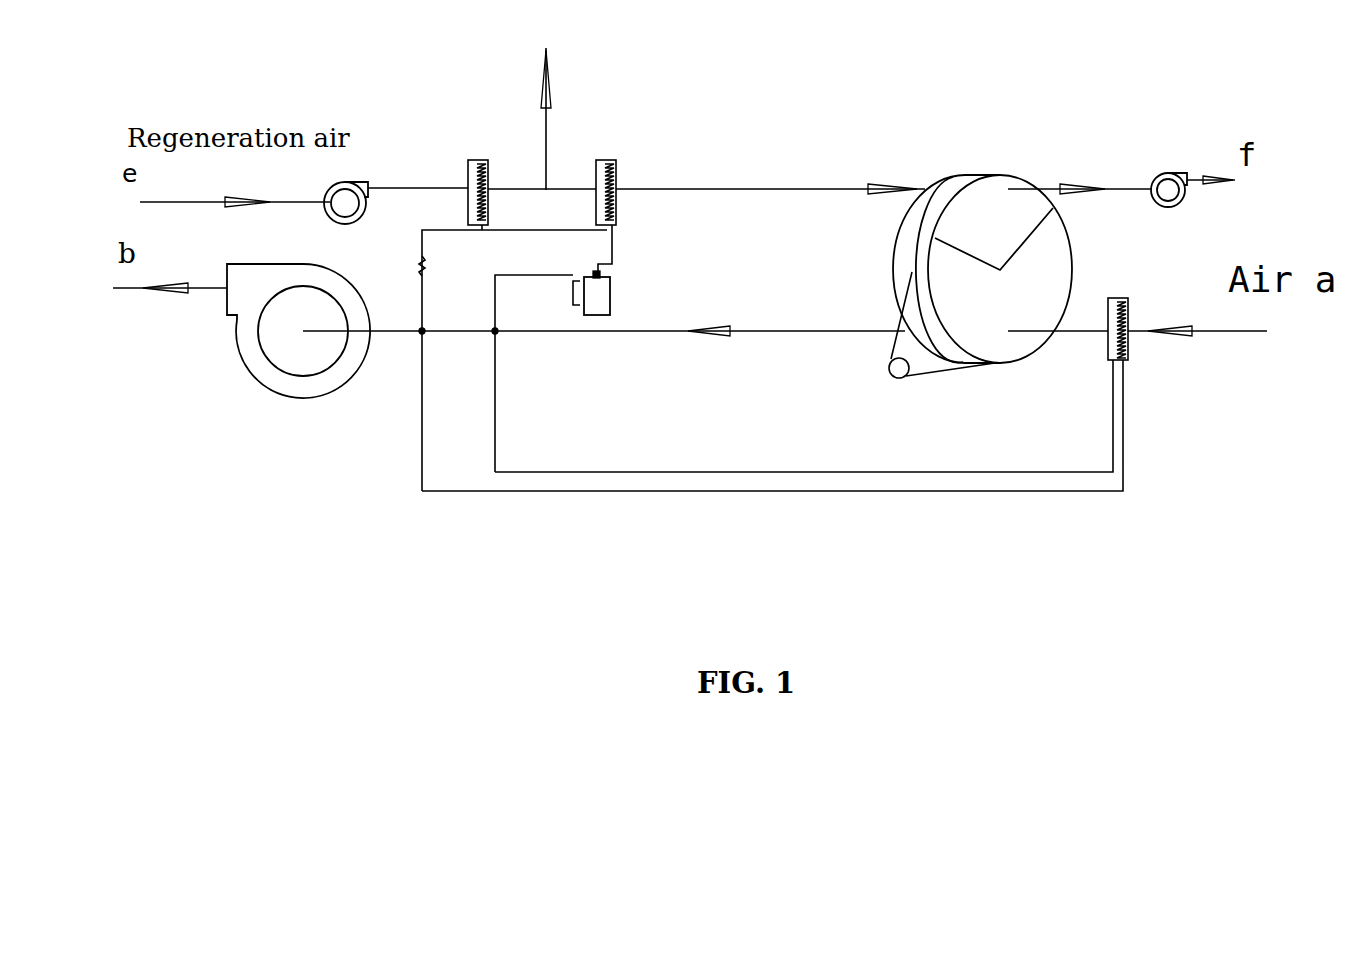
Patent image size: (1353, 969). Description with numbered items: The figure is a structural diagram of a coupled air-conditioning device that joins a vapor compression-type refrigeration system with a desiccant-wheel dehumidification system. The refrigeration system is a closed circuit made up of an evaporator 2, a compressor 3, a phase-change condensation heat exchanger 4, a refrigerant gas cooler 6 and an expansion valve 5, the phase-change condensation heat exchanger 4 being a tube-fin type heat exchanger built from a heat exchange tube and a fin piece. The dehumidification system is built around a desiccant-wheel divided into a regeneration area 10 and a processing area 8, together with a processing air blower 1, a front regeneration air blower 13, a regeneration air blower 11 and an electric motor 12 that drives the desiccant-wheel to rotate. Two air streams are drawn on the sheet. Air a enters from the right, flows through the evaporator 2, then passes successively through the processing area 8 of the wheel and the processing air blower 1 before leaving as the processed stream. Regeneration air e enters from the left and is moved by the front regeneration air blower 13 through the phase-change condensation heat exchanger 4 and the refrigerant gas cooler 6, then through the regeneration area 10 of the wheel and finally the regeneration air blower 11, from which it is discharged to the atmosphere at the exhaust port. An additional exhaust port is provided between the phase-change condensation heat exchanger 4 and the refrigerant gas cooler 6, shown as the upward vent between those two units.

The processing air blower 1 is at (280, 350).
The evaporator 2 is at (1120, 300).
The compressor 3 is at (603, 290).
The phase-change condensation heat exchanger 4 is at (480, 165).
The expansion valve 5 is at (422, 272).
The refrigerant gas cooler 6 is at (612, 165).
The processing area 8 is at (996, 315).
The regeneration area 10 is at (993, 213).
The regeneration air blower 11 is at (1175, 178).
The electric motor 12 is at (895, 372).
The front regeneration air blower 13 is at (350, 183).